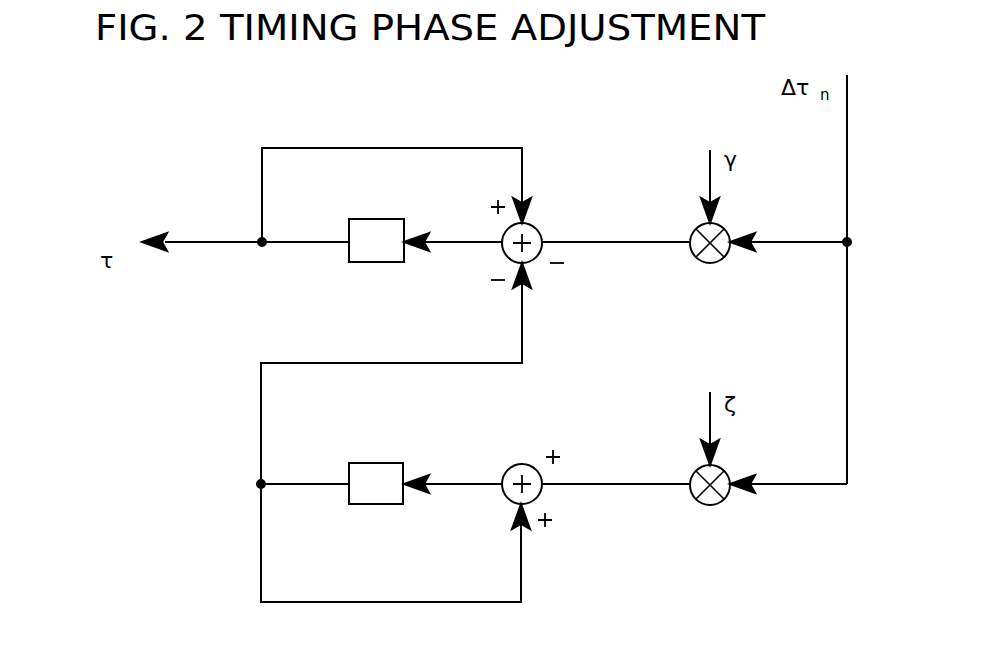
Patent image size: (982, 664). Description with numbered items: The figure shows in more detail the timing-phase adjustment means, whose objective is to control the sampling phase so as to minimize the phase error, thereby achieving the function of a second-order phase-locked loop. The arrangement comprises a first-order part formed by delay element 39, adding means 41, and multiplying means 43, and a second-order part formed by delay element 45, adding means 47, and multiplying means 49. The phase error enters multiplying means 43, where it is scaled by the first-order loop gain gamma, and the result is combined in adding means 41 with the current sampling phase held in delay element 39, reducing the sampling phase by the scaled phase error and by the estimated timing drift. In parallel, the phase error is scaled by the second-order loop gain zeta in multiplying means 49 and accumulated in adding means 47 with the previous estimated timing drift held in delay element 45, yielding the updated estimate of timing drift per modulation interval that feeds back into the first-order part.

The delay element 39 is at (369, 219).
The adding means 41 is at (535, 229).
The multiplying means 43 is at (723, 257).
The delay element 45 is at (368, 463).
The adding means 47 is at (509, 468).
The multiplying means 49 is at (723, 499).